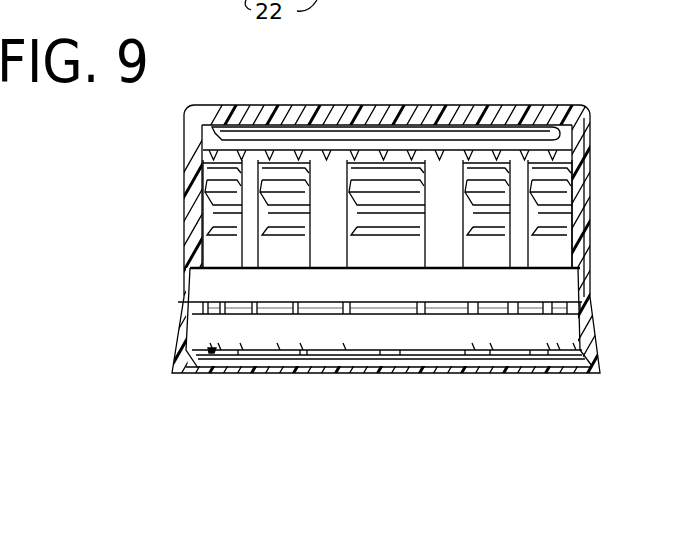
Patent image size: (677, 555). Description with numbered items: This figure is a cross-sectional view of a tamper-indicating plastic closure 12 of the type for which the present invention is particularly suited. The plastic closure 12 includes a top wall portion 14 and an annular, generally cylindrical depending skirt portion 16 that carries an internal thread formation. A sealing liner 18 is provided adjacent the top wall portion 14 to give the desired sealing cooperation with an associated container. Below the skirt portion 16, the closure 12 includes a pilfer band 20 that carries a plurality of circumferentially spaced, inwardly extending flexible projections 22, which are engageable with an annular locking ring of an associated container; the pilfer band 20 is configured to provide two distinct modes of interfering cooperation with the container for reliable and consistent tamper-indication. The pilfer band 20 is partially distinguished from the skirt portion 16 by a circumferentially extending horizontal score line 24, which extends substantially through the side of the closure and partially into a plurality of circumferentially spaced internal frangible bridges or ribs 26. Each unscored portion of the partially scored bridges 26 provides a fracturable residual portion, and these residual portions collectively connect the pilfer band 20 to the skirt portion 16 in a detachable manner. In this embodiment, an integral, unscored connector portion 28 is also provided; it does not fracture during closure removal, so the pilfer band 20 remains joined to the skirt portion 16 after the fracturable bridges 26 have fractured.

The plastic closure 12 is at (599, 115).
The top wall portion 14 is at (412, 123).
The skirt portion 16 is at (585, 203).
The sealing liner 18 is at (258, 137).
The pilfer band 20 is at (614, 376).
The flexible projections 22 is at (348, 350).
The score line 24 is at (233, 309).
The frangible bridges 26 is at (265, 305).
The connector portion 28 is at (401, 317).